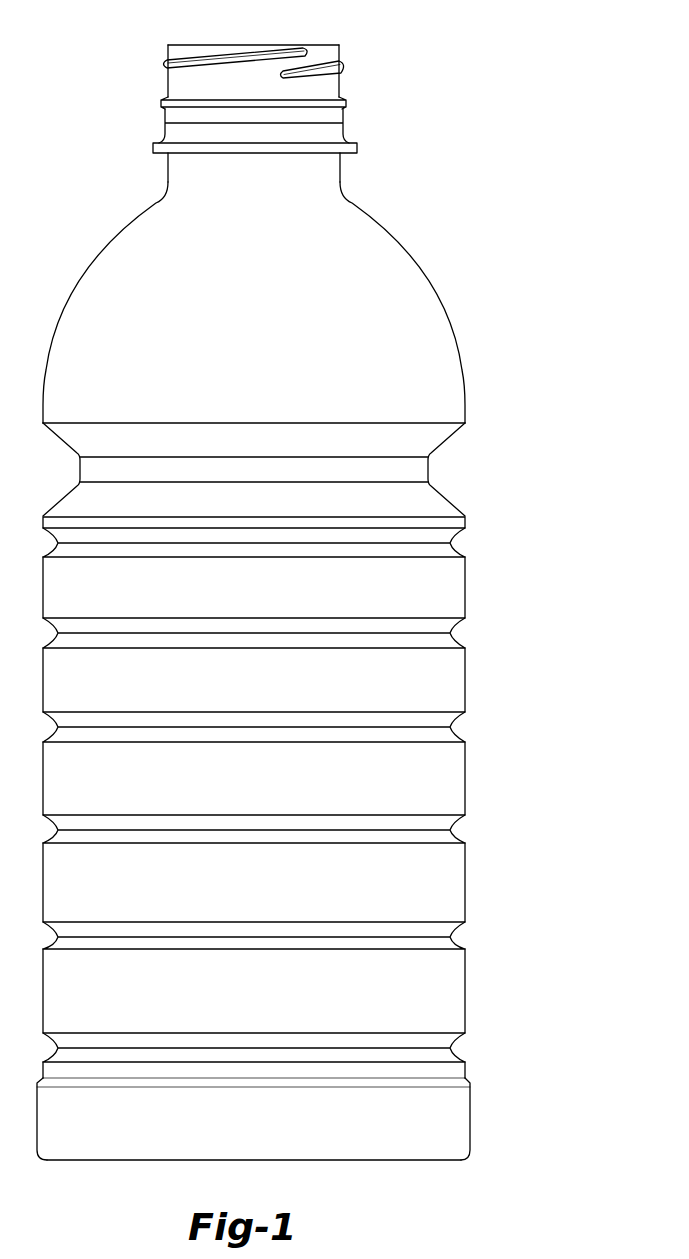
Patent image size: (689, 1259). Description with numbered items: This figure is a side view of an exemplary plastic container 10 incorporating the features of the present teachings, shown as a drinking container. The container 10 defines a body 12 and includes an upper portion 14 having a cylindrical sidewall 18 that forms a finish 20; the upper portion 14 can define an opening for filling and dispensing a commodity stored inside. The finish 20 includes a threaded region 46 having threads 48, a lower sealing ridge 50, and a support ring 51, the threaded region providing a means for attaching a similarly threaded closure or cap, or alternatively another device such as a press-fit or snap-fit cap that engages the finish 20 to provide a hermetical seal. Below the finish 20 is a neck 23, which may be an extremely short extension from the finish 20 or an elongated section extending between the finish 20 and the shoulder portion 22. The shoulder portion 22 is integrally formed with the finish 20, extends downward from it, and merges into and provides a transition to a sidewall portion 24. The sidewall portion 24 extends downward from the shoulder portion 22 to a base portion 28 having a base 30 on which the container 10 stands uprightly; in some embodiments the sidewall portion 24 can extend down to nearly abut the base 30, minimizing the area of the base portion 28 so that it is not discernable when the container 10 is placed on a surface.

The plastic container 10 is at (503, 174).
The body 12 is at (513, 679).
The upper portion 14 is at (448, 68).
The cylindrical sidewall 18 is at (345, 81).
The finish 20 is at (133, 91).
The shoulder portion 22 is at (468, 306).
The neck 23 is at (342, 163).
The sidewall portion 24 is at (476, 782).
The base portion 28 is at (483, 1155).
The base 30 is at (419, 1160).
The threaded region 46 is at (348, 47).
The threads 48 is at (228, 58).
The lower sealing ridge 50 is at (347, 98).
The support ring 51 is at (152, 147).